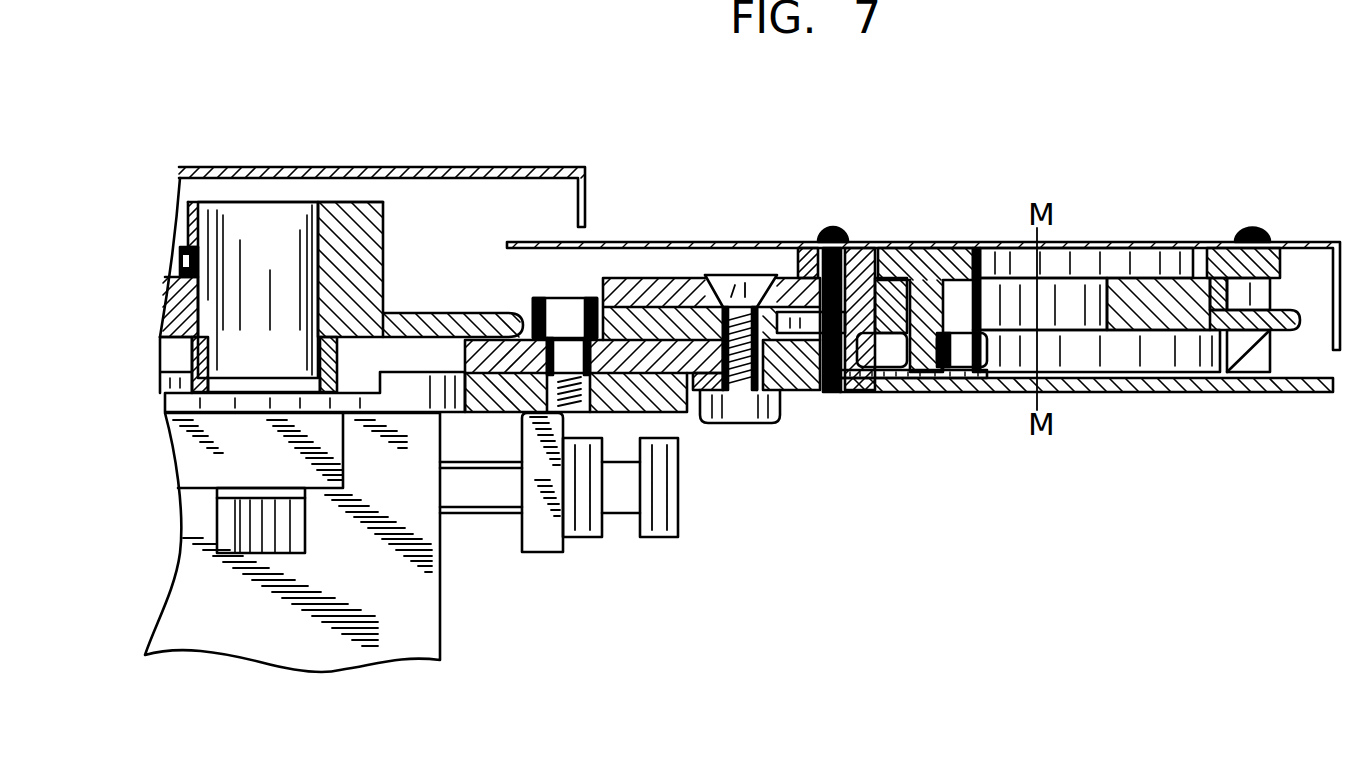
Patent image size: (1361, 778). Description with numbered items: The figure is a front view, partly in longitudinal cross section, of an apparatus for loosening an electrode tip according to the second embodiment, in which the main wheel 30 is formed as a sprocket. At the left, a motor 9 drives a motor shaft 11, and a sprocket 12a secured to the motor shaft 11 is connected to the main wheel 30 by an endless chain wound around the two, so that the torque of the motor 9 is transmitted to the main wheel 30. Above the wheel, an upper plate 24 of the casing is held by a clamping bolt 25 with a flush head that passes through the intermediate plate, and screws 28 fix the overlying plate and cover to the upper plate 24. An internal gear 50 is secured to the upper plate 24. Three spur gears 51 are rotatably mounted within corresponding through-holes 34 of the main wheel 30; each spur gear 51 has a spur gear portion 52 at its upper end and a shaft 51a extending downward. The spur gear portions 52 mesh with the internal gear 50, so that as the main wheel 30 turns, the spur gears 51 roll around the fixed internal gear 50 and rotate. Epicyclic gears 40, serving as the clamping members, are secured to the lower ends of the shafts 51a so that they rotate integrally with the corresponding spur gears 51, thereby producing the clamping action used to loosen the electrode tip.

The motor 9 is at (412, 604).
The motor shaft 11 is at (268, 223).
The sprocket 12a is at (345, 237).
The upper plate 24 is at (773, 293).
The clamping bolt 25 is at (735, 390).
The screws 28 is at (800, 262).
The main wheel 30 is at (1143, 297).
The through-holes 34 is at (940, 298).
The epicyclic gears 40 is at (880, 385).
The internal gear 50 is at (862, 258).
The spur gears 51 is at (925, 268).
The shaft 51a is at (927, 383).
The spur gear portion 52 is at (912, 255).